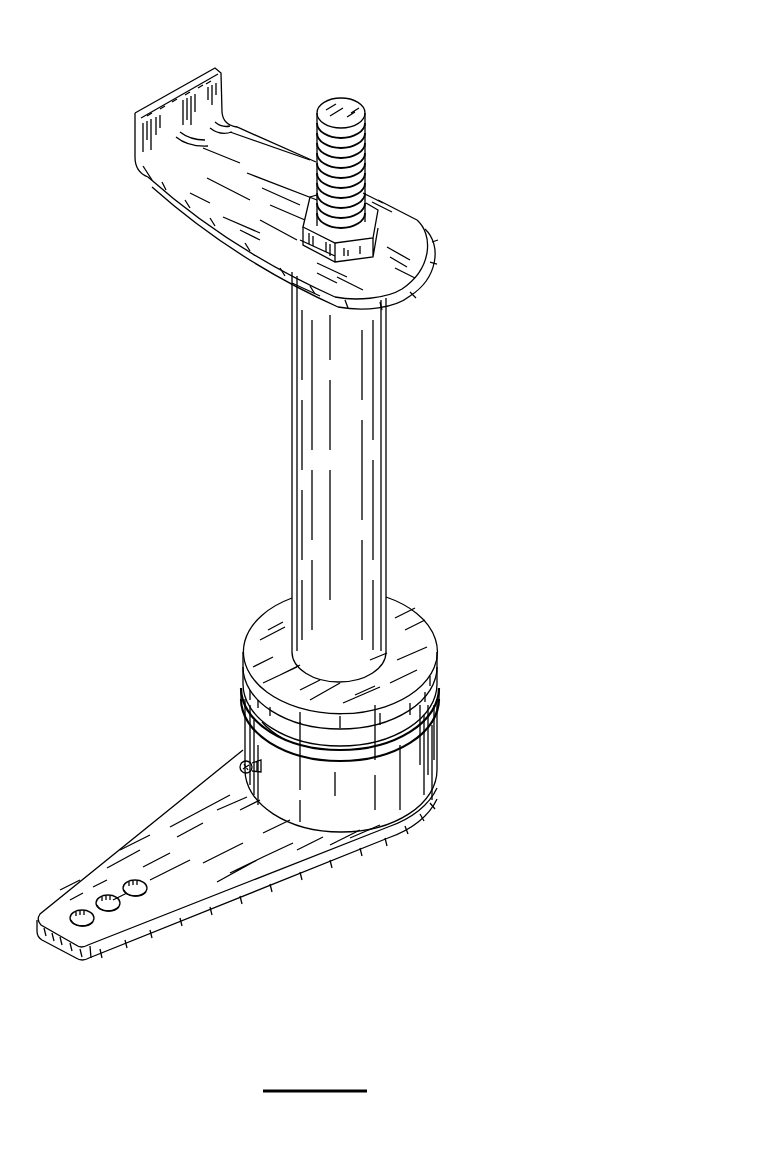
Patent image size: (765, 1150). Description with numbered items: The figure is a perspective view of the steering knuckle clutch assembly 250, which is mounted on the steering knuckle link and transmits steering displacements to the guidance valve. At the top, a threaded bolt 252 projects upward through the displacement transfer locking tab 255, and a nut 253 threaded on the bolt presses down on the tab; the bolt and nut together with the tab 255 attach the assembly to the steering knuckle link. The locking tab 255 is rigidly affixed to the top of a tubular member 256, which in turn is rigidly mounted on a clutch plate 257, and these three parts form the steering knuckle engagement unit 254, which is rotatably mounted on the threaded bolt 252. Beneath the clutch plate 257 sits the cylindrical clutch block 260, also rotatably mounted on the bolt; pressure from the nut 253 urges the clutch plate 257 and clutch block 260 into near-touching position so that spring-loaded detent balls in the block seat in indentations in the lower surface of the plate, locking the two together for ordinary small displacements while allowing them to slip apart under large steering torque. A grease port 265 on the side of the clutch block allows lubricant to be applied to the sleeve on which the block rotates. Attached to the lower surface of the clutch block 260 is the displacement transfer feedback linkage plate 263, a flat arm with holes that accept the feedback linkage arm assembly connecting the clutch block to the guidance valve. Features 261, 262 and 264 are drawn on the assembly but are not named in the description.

The steering knuckle clutch assembly 250 is at (507, 317).
The threaded bolt 252 is at (362, 125).
The nut 253 is at (382, 213).
The steering knuckle engagement unit 254 is at (405, 557).
The displacement transfer locking tab 255 is at (233, 123).
The tubular member 256 is at (385, 409).
The clutch plate 257 is at (430, 630).
The cylindrical clutch block 260 is at (437, 740).
The ring 261 is at (393, 748).
The groove 262 is at (270, 723).
The displacement transfer feedback linkage plate 263 is at (270, 866).
The mounting holes 264 is at (143, 894).
The grease port 265 is at (240, 765).